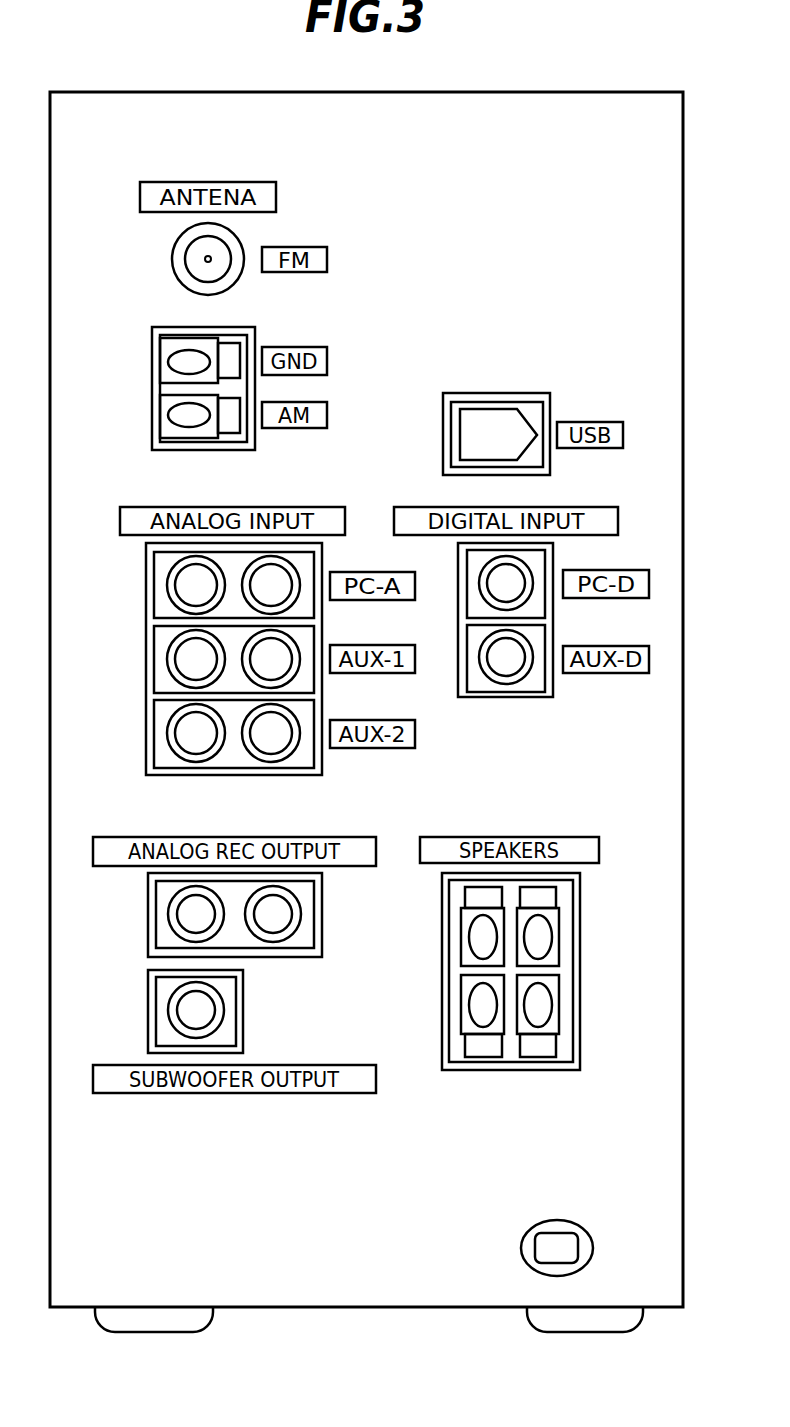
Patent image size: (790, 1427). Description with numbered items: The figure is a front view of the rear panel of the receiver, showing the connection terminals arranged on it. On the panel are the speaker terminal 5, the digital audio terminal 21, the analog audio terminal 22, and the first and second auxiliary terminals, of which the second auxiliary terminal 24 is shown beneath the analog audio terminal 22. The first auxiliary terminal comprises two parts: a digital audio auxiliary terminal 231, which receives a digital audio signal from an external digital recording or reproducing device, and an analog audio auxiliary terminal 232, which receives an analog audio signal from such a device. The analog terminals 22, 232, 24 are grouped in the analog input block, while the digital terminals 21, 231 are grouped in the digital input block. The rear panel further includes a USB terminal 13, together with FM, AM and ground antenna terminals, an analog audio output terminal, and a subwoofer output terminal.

The speaker terminal 5 is at (510, 1070).
The USB terminal 13 is at (495, 393).
The digital audio terminal 21 is at (458, 570).
The analog audio terminal 22 is at (146, 580).
The digital audio auxiliary terminal 231 is at (503, 696).
The analog audio auxiliary terminal 232 is at (146, 655).
The second auxiliary terminal 24 is at (146, 728).